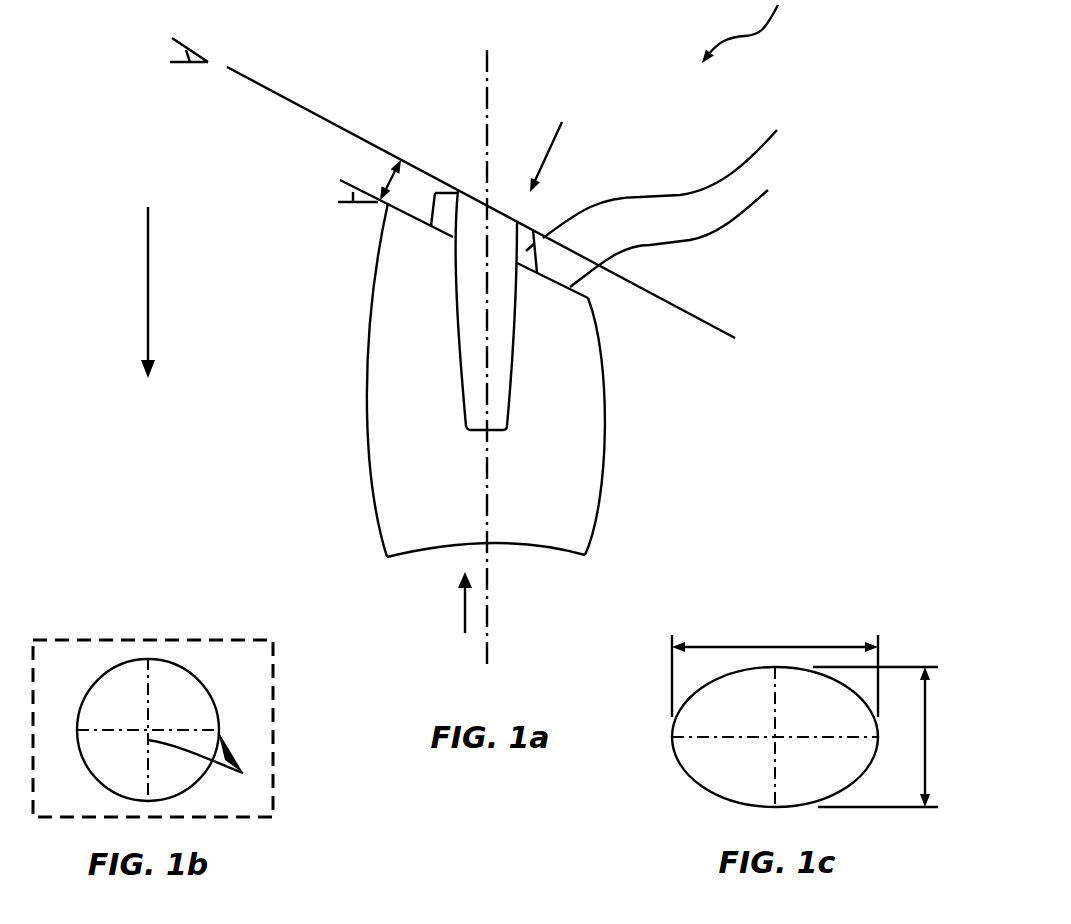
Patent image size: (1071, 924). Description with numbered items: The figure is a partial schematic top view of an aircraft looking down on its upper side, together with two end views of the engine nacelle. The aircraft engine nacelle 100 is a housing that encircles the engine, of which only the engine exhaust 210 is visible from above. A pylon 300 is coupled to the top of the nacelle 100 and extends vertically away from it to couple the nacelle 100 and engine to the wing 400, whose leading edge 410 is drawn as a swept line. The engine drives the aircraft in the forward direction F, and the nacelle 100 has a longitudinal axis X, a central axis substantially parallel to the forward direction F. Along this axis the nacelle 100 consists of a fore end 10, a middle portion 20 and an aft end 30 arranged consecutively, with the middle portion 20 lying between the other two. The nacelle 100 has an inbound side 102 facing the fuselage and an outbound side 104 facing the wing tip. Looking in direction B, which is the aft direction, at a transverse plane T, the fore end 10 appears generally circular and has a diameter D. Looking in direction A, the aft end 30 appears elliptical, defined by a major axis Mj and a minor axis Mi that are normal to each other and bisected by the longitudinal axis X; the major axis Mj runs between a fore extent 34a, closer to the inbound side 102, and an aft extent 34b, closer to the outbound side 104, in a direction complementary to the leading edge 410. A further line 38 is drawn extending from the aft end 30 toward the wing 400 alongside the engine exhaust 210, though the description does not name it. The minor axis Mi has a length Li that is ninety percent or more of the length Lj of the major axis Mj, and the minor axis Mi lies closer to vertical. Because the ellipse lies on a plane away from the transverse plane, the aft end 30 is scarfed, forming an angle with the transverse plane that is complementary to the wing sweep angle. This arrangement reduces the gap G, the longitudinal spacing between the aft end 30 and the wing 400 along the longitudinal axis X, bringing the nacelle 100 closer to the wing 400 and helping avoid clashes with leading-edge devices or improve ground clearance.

In FIG. 1a, the fore end 10 is at (469, 396).
In FIG. 1b, the fore end 10 is at (80, 618).
In FIG. 1a, the middle portion 20 is at (461, 368).
In FIG. 1a, the aft end 30 is at (462, 368).
In FIG. 1c, the aft end 30 is at (862, 595).
In FIG. 1a, the fore extent 34a is at (588, 300).
In FIG. 1a, the aft extent 34b is at (378, 203).
In FIG. 1a, the flank line 38 is at (688, 230).
In FIG. 1a, the aircraft engine nacelle 100 is at (603, 481).
In FIG. 1a, the inbound side 102 is at (625, 389).
In FIG. 1a, the outbound side 104 is at (295, 377).
In FIG. 1a, the engine exhaust 210 is at (684, 169).
In FIG. 1a, the pylon 300 is at (500, 322).
In FIG. 1a, the wing 400 is at (428, 88).
In FIG. 1a, the leading edge 410 is at (245, 79).
In FIG. 1a, the direction A is at (560, 128).
In FIG. 1a, the direction B is at (463, 608).
In FIG. 1a, the forward direction F is at (148, 260).
In FIG. 1a, the gap G is at (386, 182).
In FIG. 1a, the longitudinal axis X is at (487, 620).
In FIG. 1b, the diameter D is at (207, 760).
In FIG. 1b, the transverse plane T is at (273, 713).
In FIG. 1c, the length of the major axis Lj is at (775, 665).
In FIG. 1c, the length of the minor axis Li is at (875, 737).
In FIG. 1c, the major axis Mj is at (687, 738).
In FIG. 1c, the minor axis Mi is at (775, 760).